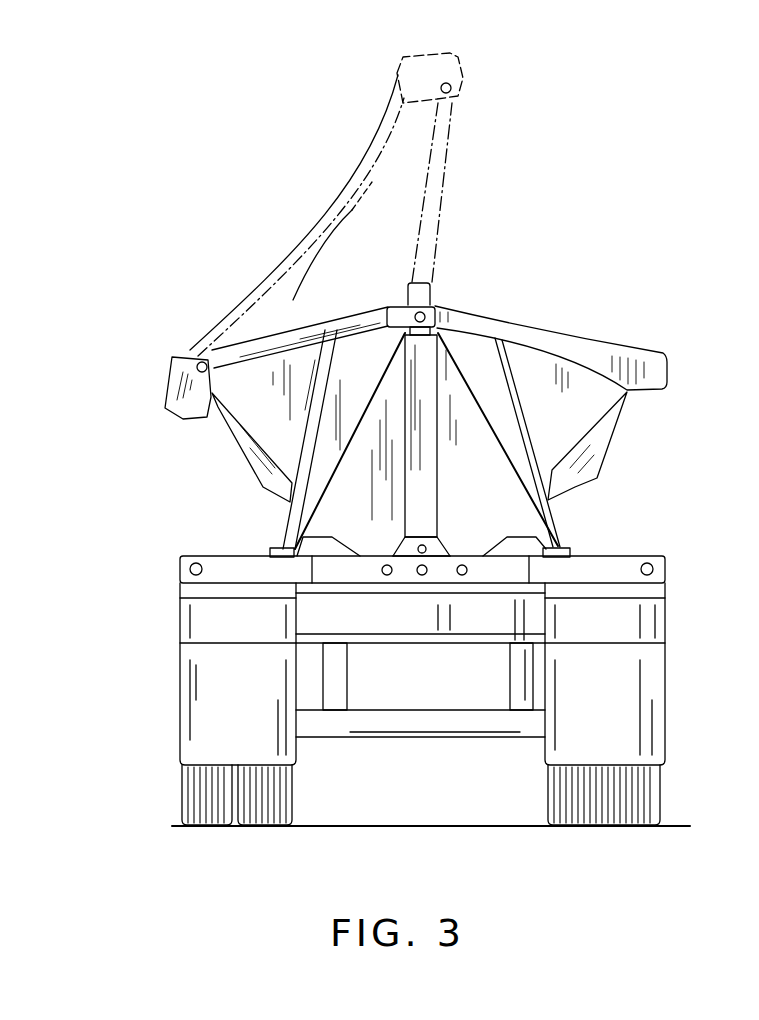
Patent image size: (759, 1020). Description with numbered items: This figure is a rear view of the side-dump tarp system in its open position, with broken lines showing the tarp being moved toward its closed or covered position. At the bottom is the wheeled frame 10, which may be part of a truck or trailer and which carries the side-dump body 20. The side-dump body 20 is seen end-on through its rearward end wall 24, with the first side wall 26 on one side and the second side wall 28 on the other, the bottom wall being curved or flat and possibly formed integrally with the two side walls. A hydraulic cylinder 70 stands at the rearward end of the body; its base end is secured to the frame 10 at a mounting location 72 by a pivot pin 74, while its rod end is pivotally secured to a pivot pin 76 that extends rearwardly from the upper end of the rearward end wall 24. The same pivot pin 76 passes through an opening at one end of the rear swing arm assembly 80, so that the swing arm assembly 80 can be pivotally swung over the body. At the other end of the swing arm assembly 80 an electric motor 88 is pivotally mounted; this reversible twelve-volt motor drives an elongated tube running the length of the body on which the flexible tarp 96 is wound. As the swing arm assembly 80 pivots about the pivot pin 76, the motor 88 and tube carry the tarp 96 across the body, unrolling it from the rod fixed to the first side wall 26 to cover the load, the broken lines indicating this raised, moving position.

The wheeled frame 10 is at (700, 587).
The side-dump body 20 is at (240, 507).
The rearward end wall 24 is at (361, 516).
The first side wall 26 is at (265, 458).
The second side wall 28 is at (598, 461).
The hydraulic cylinder 70 is at (434, 401).
The base end mounting location 72 is at (452, 549).
The pivot pin 74 is at (424, 554).
The pivot pin 76 is at (432, 303).
The rear swing arm assembly 80 is at (331, 313).
The electric motor 88 is at (155, 375).
The tarp 96 is at (409, 185).